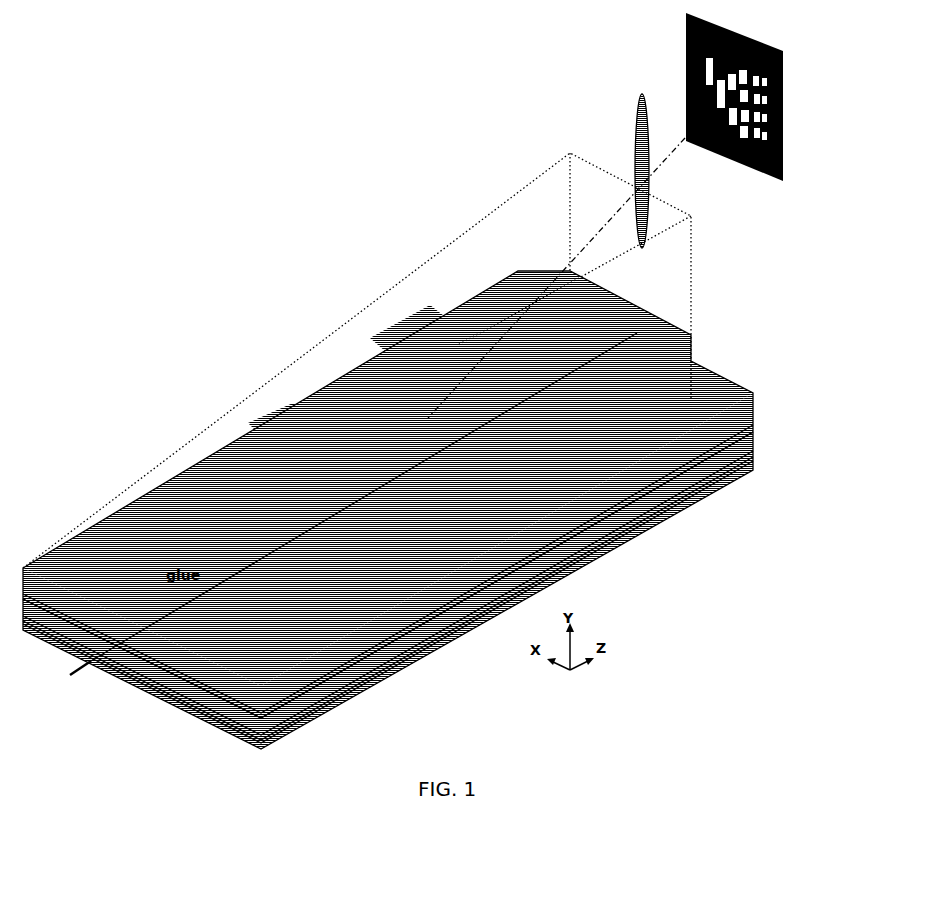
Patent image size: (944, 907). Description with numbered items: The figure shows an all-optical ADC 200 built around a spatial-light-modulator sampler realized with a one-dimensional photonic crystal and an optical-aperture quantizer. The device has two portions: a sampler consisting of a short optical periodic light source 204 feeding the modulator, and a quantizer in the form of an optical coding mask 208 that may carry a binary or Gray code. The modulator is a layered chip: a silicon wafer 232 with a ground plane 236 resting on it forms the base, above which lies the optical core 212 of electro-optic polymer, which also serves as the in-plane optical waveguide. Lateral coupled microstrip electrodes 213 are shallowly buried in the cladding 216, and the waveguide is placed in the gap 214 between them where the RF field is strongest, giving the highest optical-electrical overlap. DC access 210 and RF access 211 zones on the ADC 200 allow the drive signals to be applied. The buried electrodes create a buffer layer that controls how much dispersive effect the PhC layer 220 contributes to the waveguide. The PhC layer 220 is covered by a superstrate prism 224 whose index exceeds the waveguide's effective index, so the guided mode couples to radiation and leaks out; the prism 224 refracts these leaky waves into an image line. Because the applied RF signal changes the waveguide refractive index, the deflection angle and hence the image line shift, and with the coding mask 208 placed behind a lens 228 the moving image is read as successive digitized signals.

The all-optical ADC 200 is at (130, 135).
The short optical periodic light source 204 is at (58, 694).
The optical coding mask 208 is at (681, 97).
The DC access 210 is at (342, 498).
The RF access 211 is at (361, 476).
The optical core 212 is at (697, 478).
The electrodes 213 is at (413, 442).
The gap 214 is at (400, 457).
The cladding 216 is at (727, 389).
The PhC layer 220 is at (643, 507).
The prism 224 is at (683, 301).
The lens 228 is at (684, 208).
The silicon wafer 232 is at (718, 429).
The ground plane 236 is at (715, 452).